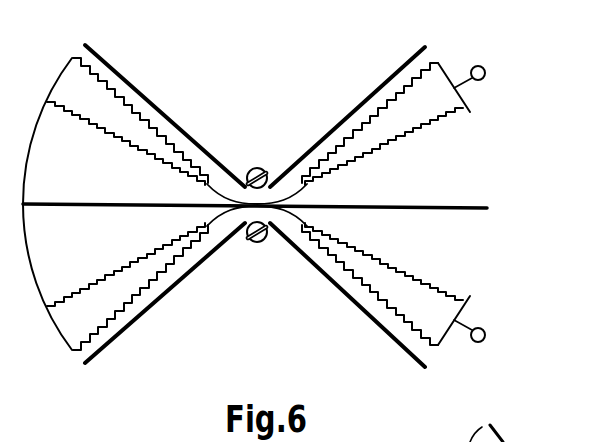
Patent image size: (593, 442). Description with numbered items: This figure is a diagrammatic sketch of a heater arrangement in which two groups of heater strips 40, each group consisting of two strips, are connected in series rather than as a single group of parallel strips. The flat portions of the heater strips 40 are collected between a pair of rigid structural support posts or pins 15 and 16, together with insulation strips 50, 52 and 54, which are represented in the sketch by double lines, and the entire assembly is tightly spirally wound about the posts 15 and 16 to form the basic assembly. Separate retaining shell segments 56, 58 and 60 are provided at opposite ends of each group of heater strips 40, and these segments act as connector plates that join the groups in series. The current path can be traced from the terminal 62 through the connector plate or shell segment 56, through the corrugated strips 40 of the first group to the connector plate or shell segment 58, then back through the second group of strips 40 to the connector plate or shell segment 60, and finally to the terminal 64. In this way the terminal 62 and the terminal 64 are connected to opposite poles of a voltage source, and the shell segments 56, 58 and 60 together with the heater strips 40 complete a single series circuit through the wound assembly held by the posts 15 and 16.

The rigid structural support post 15 is at (254, 167).
The rigid structural support post 16 is at (258, 243).
The heater strip 40 is at (107, 133).
The insulation strip 50 is at (337, 125).
The insulation strip 52 is at (365, 206).
The insulation strip 54 is at (291, 260).
The retaining shell segment 56 is at (463, 97).
The retaining shell segment 58 is at (36, 118).
The retaining shell segment 60 is at (462, 317).
The terminal 62 is at (485, 68).
The terminal 64 is at (487, 347).